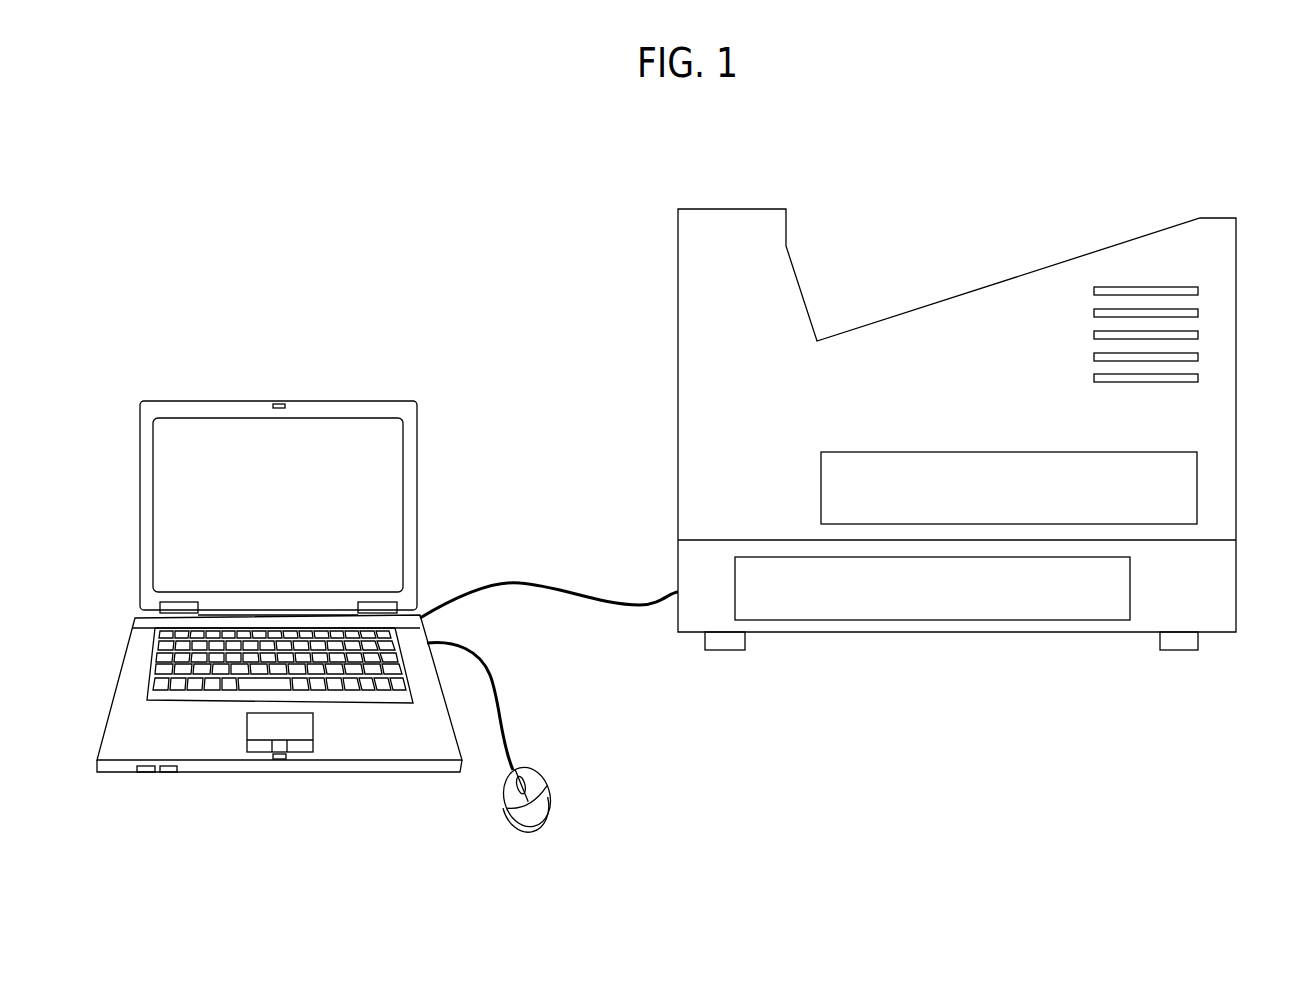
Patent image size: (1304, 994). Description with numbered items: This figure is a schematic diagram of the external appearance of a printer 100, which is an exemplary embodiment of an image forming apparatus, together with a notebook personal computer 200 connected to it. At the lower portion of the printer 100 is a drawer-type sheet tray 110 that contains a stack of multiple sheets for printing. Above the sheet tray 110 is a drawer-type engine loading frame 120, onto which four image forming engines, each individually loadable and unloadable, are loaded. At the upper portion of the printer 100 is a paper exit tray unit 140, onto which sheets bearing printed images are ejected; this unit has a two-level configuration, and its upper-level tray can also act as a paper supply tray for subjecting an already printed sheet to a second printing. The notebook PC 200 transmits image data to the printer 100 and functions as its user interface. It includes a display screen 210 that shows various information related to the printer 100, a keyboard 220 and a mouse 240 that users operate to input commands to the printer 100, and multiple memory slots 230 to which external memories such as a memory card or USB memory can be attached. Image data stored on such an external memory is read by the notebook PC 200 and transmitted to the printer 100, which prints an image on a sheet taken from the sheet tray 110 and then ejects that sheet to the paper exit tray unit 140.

The printer 100 is at (828, 386).
The sheet tray 110 is at (1130, 584).
The engine loading frame 120 is at (1197, 482).
The paper exit tray unit 140 is at (1075, 277).
The notebook personal computer 200 is at (261, 525).
The display screen 210 is at (380, 458).
The keyboard 220 is at (170, 653).
The memory slots 230 is at (165, 773).
The mouse 240 is at (552, 798).